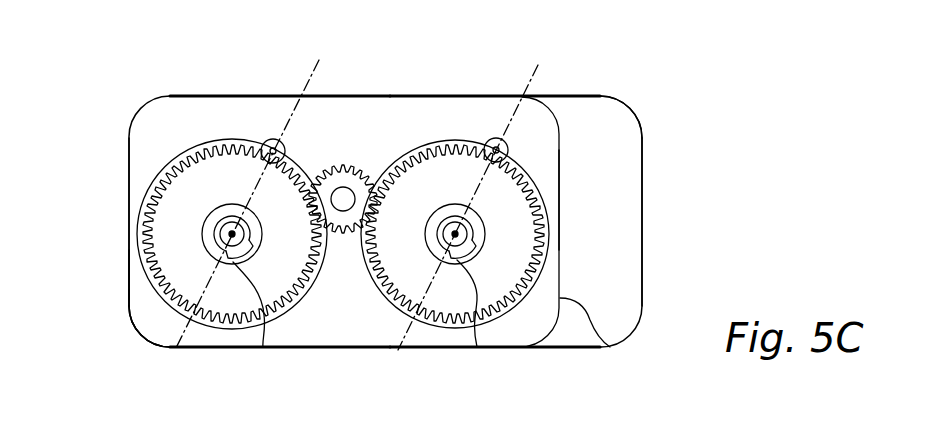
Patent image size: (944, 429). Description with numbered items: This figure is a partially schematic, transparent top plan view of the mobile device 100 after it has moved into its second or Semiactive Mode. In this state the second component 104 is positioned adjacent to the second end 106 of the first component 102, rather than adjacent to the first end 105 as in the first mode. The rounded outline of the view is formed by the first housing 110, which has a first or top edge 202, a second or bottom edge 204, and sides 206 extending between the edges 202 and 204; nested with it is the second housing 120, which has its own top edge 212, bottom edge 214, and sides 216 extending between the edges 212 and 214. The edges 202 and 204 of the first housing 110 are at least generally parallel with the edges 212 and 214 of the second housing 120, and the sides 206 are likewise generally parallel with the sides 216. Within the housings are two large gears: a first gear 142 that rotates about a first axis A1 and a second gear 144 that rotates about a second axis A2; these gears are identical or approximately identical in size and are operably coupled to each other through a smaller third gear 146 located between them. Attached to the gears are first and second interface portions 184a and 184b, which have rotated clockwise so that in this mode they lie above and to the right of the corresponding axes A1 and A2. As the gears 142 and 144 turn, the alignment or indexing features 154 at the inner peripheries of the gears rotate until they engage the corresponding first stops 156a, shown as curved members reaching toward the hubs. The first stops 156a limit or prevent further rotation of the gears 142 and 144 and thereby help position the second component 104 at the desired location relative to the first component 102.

The mobile device 100 is at (634, 53).
The first component 102 is at (630, 277).
The second component 104 is at (143, 320).
The first end 105 is at (636, 107).
The second end 106 is at (129, 339).
The first housing 110 is at (130, 305).
The second housing 120 is at (610, 347).
The first gear 142 is at (140, 232).
The second gear 144 is at (437, 327).
The third gear 146 is at (353, 175).
The alignment feature 154 is at (252, 250).
The first stop 156a is at (262, 340).
The first interface portion 184a is at (268, 141).
The second interface portion 184b is at (491, 140).
The top edge 202 is at (190, 93).
The bottom edge 204 is at (572, 350).
The sides 206 is at (127, 195).
The top edge 212 is at (350, 96).
The bottom edge 214 is at (217, 350).
The sides 216 is at (128, 270).
The first axis A1 is at (237, 233).
The second axis A2 is at (459, 233).